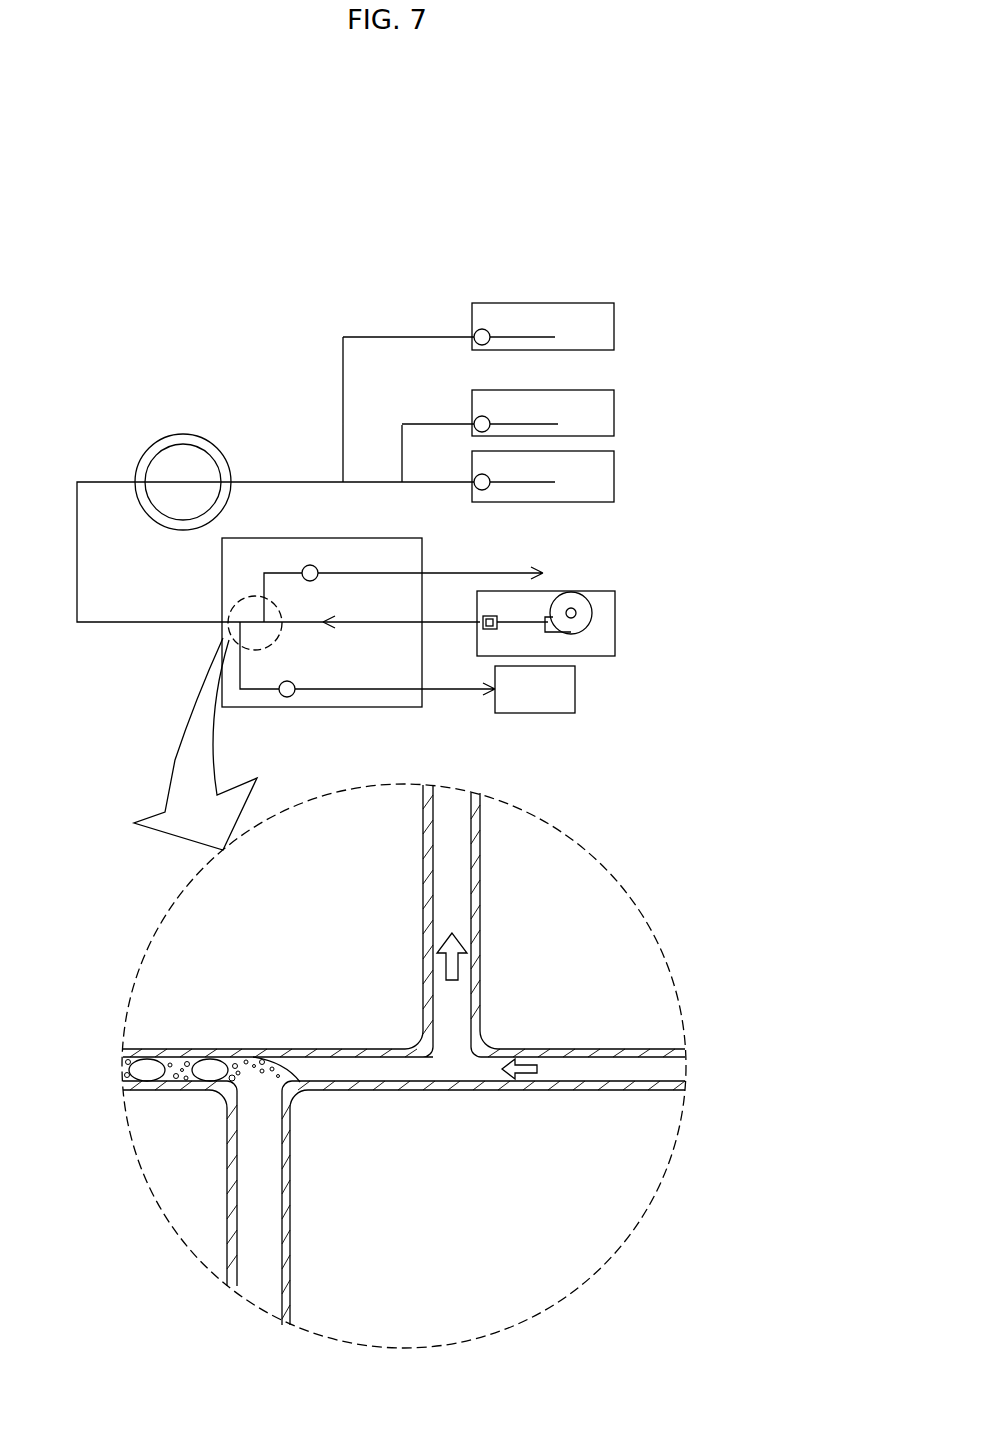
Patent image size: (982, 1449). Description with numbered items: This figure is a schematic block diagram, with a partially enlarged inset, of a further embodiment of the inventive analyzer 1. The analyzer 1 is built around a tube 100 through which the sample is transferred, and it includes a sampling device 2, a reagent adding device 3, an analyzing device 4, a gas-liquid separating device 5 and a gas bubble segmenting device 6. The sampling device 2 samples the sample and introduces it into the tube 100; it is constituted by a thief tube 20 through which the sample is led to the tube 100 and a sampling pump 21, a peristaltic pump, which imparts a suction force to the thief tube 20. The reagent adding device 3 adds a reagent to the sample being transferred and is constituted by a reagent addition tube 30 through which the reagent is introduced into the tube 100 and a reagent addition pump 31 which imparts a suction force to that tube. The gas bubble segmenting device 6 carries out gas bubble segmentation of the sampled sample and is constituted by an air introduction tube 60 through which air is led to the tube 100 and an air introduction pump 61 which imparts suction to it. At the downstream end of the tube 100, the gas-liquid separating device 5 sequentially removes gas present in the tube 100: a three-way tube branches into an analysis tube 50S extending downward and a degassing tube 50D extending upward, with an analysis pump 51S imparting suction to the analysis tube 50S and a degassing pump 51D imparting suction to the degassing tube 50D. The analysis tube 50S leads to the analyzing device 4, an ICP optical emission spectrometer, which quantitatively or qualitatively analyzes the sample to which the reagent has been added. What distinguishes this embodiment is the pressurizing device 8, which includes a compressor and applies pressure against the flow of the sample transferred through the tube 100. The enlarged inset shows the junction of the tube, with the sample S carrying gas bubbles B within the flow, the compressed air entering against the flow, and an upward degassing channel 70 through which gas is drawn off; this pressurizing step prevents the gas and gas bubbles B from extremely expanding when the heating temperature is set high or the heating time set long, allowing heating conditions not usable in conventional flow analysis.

The analyzer 1 is at (584, 168).
The sampling device 2 is at (615, 455).
The reagent adding device 3 is at (615, 307).
The analyzing device 4 is at (198, 442).
The gas-liquid separating device 5 is at (431, 538).
The gas bubble segmenting device 6 is at (615, 394).
The pressurizing device 8 is at (617, 590).
The thief tube 20 is at (519, 482).
The sampling pump 21 is at (489, 478).
The reagent addition tube 30 is at (519, 337).
The reagent addition pump 31 is at (489, 333).
The air introduction tube 60 is at (519, 424).
The air introduction pump 61 is at (489, 420).
The degassing flow path 70 is at (480, 902).
The tube 100 is at (148, 621).
The degassing tube 50D is at (369, 573).
The degassing pump 51D is at (316, 568).
The analysis tube 50S is at (336, 689).
The analysis pump 51S is at (293, 684).
The sample liquid S is at (177, 1062).
The gas bubbles B is at (145, 1074).